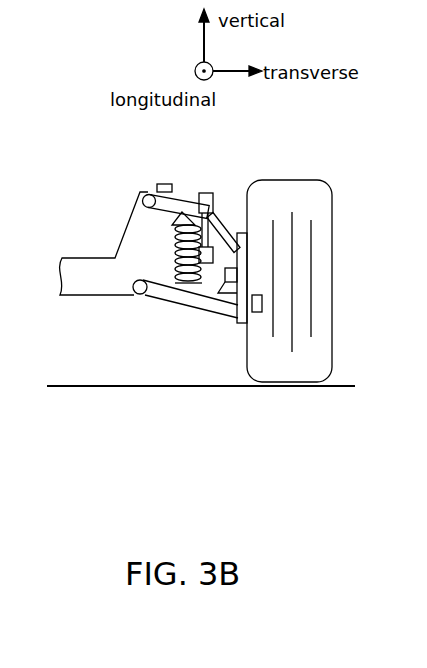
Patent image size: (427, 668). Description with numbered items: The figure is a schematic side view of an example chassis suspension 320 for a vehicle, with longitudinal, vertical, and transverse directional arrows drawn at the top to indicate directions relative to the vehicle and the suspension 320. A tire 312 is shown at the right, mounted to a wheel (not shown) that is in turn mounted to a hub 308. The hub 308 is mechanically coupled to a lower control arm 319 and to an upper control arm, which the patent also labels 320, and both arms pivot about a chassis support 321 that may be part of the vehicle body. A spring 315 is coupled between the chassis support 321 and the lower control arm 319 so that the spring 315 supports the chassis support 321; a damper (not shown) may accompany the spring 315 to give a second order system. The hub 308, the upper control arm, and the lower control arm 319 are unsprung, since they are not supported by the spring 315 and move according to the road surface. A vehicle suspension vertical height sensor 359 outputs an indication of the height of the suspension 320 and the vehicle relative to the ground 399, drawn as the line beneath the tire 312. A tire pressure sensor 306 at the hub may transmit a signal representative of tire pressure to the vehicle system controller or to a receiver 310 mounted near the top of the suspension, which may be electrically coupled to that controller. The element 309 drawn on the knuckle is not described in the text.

The chassis suspension 320 is at (152, 231).
The receiver 310 is at (165, 184).
The vehicle suspension vertical height sensor 359 is at (220, 228).
The tire 312 is at (332, 270).
The chassis support 321 is at (78, 296).
The spring 315 is at (170, 223).
The knuckle arm bracket 309 is at (225, 283).
The lower control arm 319 is at (185, 300).
The hub 308 is at (240, 323).
The tire pressure sensor 306 is at (258, 312).
The ground 399 is at (73, 386).